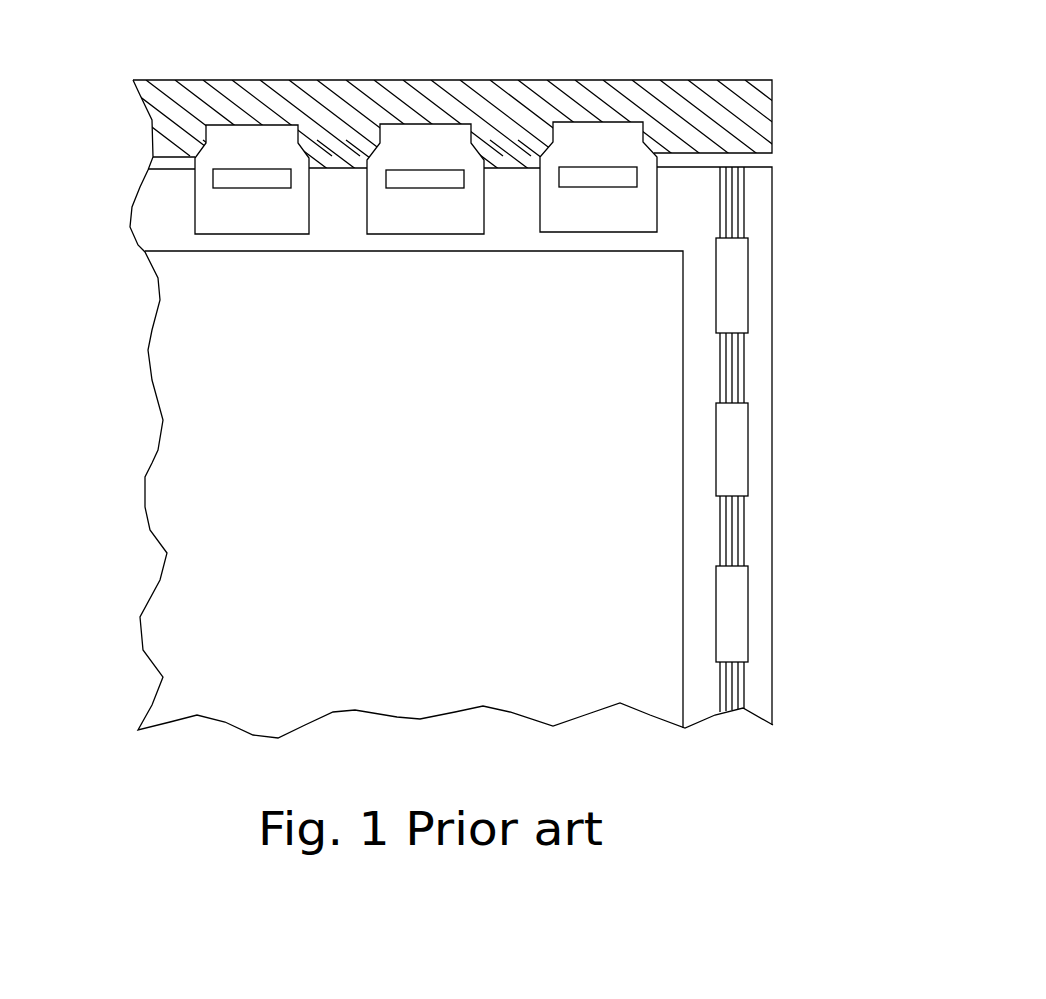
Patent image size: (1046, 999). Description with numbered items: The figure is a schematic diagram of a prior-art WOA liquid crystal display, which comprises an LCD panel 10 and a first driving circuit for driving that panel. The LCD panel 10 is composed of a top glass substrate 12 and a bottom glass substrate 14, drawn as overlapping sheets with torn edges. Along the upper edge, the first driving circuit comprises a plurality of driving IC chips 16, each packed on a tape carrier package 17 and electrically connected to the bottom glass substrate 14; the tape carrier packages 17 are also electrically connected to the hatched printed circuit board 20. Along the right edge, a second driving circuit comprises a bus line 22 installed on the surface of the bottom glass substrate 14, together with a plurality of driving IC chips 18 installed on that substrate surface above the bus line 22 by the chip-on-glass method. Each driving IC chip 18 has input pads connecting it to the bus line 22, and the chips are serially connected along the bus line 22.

The LCD panel 10 is at (878, 615).
The top glass substrate 12 is at (168, 477).
The bottom glass substrate 14 is at (155, 240).
The driving IC chips 16 is at (227, 175).
The tape carrier packages 17 is at (244, 142).
The driving IC chips 18 is at (735, 288).
The printed circuit board 20 is at (772, 117).
The bus line 22 is at (740, 210).